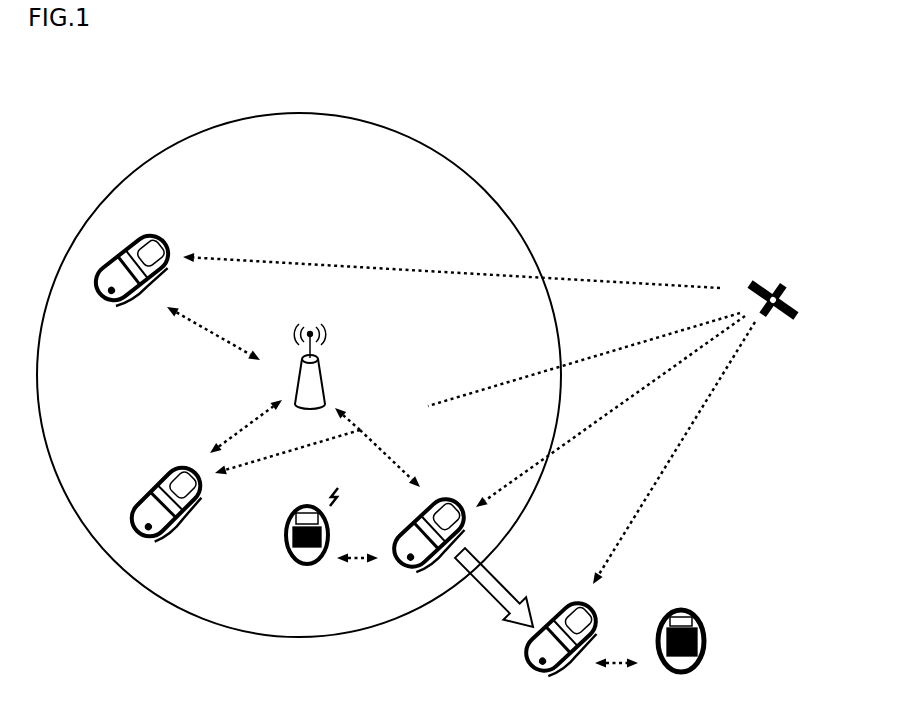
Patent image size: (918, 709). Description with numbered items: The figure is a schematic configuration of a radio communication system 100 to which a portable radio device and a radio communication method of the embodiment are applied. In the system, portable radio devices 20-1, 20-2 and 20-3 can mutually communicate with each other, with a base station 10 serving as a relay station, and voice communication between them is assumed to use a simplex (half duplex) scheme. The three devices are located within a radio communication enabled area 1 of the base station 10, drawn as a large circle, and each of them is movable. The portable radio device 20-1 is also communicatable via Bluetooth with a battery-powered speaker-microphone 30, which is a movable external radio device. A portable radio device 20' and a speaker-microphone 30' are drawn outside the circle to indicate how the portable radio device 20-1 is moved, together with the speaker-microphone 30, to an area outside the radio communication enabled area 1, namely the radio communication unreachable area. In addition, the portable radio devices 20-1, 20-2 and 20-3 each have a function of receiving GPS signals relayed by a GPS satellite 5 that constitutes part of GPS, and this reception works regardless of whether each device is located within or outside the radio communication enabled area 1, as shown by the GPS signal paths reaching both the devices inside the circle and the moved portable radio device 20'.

The radio communication system 100 is at (265, 93).
The radio communication enabled area 1 is at (408, 138).
The GPS satellite 5 is at (788, 288).
The base station 10 is at (322, 373).
The portable radio device 20-1 is at (455, 490).
The portable radio device 20-2 is at (172, 470).
The portable radio device 20-3 is at (188, 228).
The portable radio device 20' is at (563, 621).
The speaker-microphone 30 is at (305, 520).
The speaker-microphone 30' is at (689, 626).